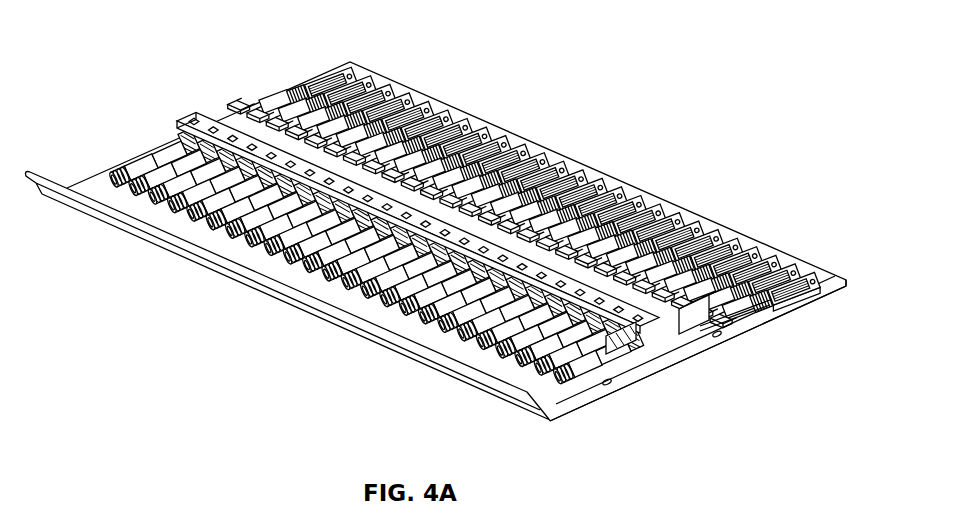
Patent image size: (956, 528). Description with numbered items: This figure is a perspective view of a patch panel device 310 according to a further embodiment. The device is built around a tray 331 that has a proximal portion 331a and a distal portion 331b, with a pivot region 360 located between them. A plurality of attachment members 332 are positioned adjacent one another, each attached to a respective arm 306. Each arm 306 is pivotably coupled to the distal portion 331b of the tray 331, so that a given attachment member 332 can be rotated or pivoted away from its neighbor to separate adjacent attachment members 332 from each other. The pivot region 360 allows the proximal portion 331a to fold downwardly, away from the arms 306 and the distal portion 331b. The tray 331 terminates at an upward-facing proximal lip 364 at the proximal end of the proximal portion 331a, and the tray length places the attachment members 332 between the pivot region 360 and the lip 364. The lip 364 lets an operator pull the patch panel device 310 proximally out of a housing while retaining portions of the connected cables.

The patch panel device 310 is at (436, 240).
The arm 306 is at (362, 78).
The tray 331 is at (436, 256).
The proximal portion 331a is at (570, 417).
The distal portion 331b is at (828, 302).
The attachment member 332 is at (657, 326).
The pivot region 360 is at (733, 322).
The proximal lip 364 is at (127, 220).